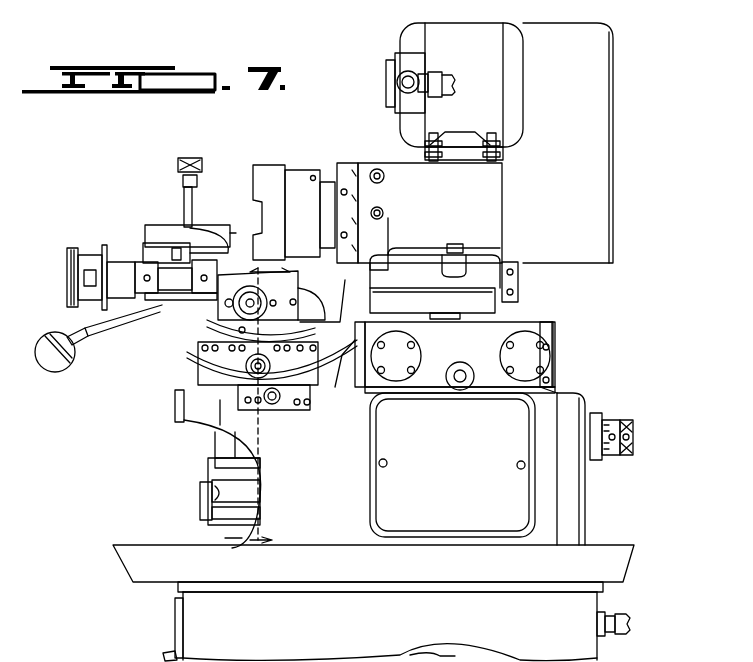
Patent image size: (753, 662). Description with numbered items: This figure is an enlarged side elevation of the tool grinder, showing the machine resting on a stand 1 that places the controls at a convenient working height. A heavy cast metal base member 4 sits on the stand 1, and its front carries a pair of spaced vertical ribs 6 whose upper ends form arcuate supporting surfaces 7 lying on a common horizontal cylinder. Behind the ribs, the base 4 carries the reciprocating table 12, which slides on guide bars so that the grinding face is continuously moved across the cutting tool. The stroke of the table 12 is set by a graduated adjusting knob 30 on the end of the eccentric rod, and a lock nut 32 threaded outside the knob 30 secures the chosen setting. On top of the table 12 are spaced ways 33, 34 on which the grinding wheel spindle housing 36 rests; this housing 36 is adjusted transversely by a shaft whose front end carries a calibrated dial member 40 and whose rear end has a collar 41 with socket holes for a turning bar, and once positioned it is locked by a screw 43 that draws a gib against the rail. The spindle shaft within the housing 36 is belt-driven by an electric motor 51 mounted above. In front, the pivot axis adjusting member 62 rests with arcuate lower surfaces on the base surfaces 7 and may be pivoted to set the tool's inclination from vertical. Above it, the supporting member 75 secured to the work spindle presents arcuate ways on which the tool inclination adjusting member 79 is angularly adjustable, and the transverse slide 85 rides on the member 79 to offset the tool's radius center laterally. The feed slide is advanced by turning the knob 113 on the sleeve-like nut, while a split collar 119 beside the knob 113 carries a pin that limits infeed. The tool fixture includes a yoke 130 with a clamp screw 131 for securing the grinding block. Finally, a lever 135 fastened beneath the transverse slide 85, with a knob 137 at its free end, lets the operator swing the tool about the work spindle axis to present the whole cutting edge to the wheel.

The stand 1 is at (328, 628).
The base member 4 is at (553, 428).
The vertical ribs 6 is at (298, 446).
The arcuate supporting surfaces 7 is at (327, 356).
The table 12 is at (268, 576).
The graduated adjusting knob 30 is at (605, 419).
The lock nut 32 is at (634, 431).
The way 33 is at (385, 313).
The way 34 is at (462, 313).
The grinding wheel spindle housing 36 is at (462, 210).
The graduated dial member 40 is at (365, 286).
The collar 41 is at (520, 284).
The screw 43 is at (452, 251).
The electric motor 51 is at (474, 56).
The pivot axis adjusting member 62 is at (205, 362).
The supporting member 75 is at (200, 340).
The tool inclination adjusting member 79 is at (210, 321).
The transverse slide 85 is at (296, 300).
The knob 113 is at (76, 250).
The collar 119 is at (89, 256).
The yoke 130 is at (185, 193).
The clamp screw 131 is at (188, 158).
The lever 135 is at (110, 340).
The knob 137 is at (40, 352).